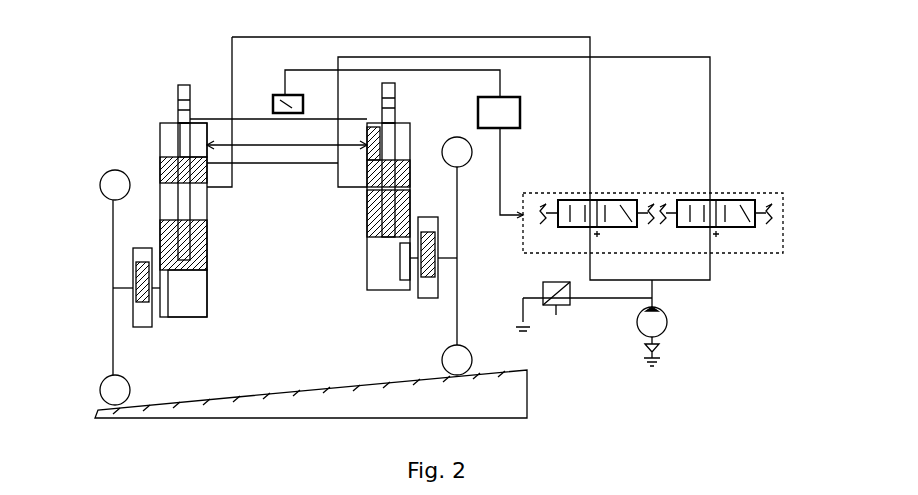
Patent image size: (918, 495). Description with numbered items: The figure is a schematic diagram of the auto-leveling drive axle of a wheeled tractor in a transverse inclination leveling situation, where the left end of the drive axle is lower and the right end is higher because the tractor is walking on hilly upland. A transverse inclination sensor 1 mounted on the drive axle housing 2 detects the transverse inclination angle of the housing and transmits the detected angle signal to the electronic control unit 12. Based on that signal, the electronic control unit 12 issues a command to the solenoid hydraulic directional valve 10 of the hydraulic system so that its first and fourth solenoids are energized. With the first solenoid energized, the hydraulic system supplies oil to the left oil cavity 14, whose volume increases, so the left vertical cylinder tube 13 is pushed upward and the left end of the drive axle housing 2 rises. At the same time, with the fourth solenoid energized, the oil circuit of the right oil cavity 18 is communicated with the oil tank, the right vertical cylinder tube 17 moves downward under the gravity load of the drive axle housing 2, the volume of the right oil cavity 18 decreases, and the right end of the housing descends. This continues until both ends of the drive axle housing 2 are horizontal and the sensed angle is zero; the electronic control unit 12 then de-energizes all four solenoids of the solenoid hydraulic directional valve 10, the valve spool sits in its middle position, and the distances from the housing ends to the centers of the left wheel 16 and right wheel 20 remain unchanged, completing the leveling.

The transverse inclination sensor 1 is at (273, 100).
The drive axle housing 2 is at (228, 114).
The solenoid hydraulic directional valve 10 is at (730, 253).
The electronic control unit 12 is at (521, 118).
The left vertical cylinder tube 13 is at (160, 173).
The left oil cavity 14 is at (195, 205).
The left wheel 16 is at (113, 352).
The right vertical cylinder tube 17 is at (413, 178).
The right oil cavity 18 is at (367, 195).
The right wheel 20 is at (457, 328).